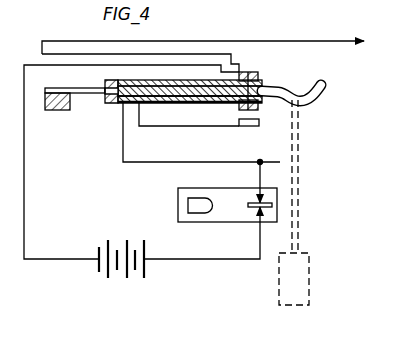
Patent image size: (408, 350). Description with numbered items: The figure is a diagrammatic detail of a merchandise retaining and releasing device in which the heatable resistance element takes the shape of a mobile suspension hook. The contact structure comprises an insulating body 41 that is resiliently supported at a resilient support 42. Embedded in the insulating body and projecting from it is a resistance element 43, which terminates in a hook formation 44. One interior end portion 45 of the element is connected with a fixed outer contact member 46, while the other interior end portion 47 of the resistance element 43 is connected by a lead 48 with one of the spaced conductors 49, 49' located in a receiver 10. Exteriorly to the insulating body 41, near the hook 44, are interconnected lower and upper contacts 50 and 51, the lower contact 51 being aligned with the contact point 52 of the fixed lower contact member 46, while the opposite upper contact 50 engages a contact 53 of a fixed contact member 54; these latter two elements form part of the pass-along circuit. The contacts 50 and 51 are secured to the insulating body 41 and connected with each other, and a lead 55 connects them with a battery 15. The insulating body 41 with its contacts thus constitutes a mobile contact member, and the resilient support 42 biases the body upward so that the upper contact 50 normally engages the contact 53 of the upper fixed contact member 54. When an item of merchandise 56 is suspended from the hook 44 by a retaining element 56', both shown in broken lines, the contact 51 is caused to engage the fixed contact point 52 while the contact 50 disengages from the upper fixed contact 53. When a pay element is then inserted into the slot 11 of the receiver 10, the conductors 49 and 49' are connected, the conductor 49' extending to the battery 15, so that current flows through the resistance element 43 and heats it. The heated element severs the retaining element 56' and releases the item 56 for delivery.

The receiver 10 is at (178, 204).
The slot 11 is at (266, 206).
The battery 15 is at (107, 283).
The insulating body 41 is at (112, 102).
The resilient support 42 is at (86, 96).
The resistance element 43 is at (272, 70).
The hook formation 44 is at (323, 84).
The interior end portion 45 is at (171, 103).
The fixed outer contact member 46 is at (204, 126).
The interior end portion 47 is at (133, 86).
The lead 48 is at (155, 163).
The conductor 49 is at (237, 182).
The conductor 49' is at (202, 233).
The upper contact 50 is at (249, 79).
The lower contact 51 is at (267, 106).
The contact point 52 is at (253, 127).
The contact 53 is at (248, 70).
The fixed contact member 54 is at (207, 40).
The lead 55 is at (27, 178).
The item of merchandise 56 is at (307, 279).
The retaining element 56' is at (308, 176).